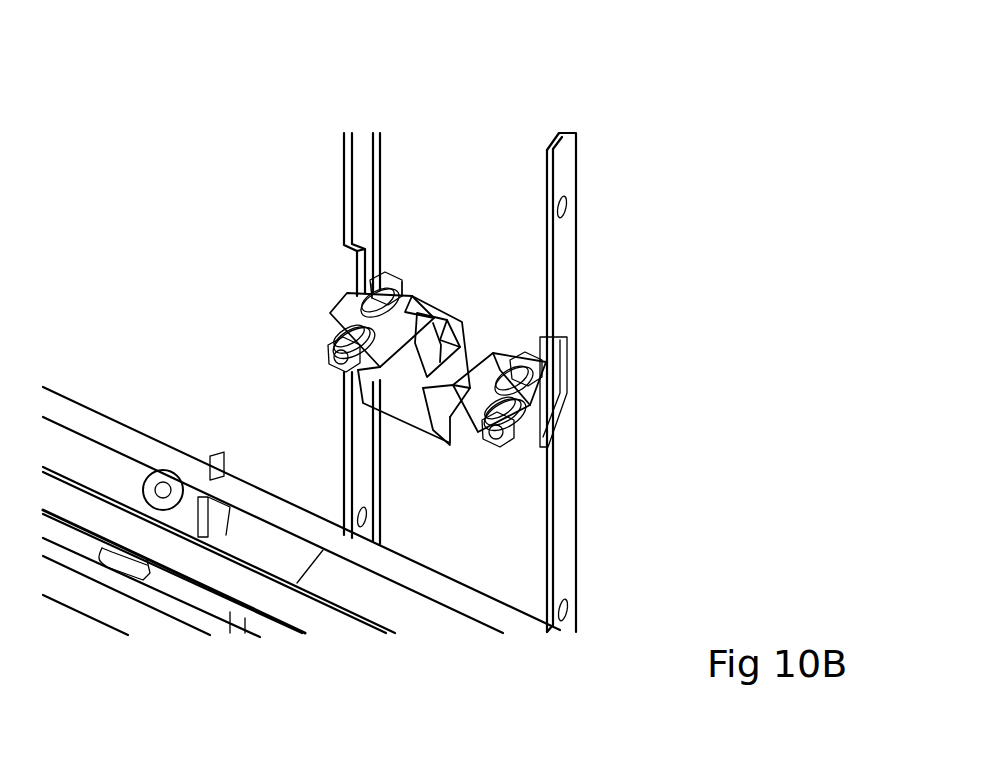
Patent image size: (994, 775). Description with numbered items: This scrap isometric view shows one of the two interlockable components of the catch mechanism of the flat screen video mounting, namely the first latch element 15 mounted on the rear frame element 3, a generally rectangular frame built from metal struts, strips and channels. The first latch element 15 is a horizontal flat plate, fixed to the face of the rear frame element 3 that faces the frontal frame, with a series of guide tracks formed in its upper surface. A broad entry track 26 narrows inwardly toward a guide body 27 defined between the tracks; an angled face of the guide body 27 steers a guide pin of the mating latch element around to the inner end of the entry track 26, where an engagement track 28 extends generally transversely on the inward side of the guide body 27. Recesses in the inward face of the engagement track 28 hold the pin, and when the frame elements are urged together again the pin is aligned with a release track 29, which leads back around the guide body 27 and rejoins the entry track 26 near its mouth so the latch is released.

The rear frame element 3 is at (395, 178).
The first latch element 15 is at (465, 465).
The entry track 26 is at (393, 363).
The guide body 27 is at (437, 356).
The engagement track 28 is at (462, 325).
The release track 29 is at (462, 366).